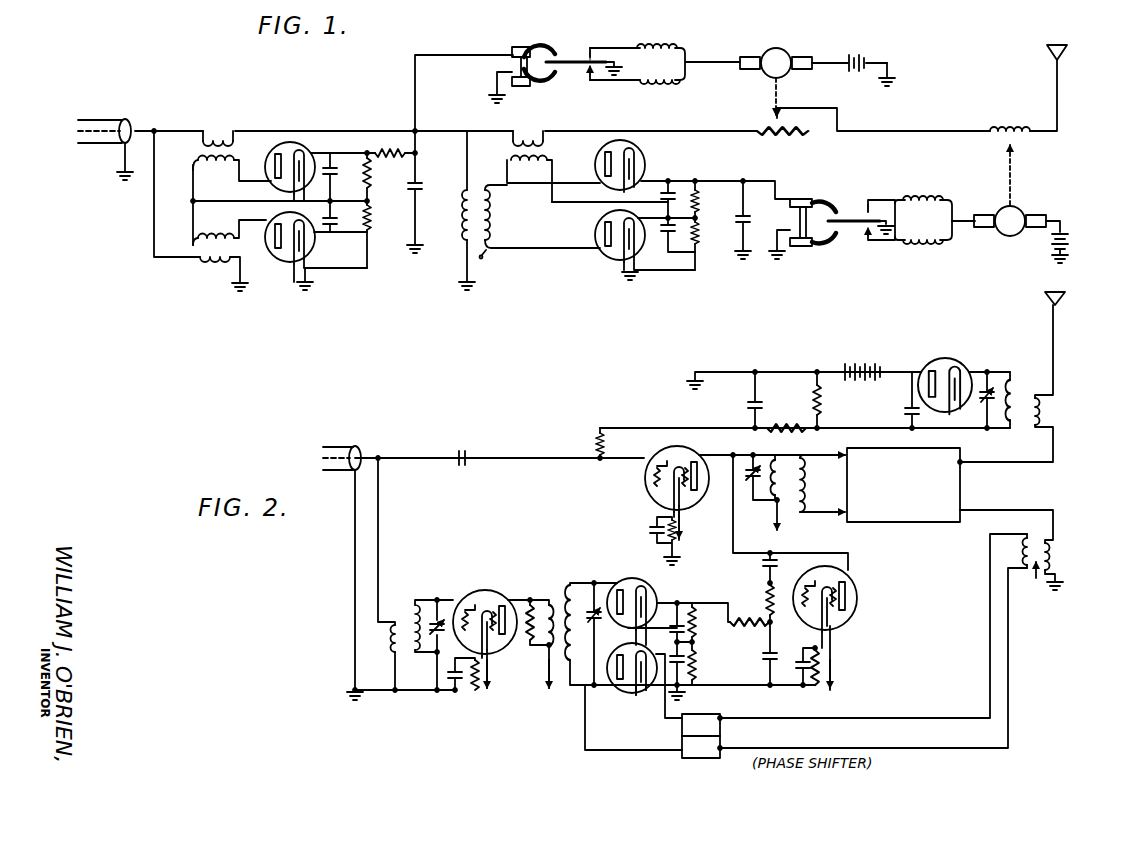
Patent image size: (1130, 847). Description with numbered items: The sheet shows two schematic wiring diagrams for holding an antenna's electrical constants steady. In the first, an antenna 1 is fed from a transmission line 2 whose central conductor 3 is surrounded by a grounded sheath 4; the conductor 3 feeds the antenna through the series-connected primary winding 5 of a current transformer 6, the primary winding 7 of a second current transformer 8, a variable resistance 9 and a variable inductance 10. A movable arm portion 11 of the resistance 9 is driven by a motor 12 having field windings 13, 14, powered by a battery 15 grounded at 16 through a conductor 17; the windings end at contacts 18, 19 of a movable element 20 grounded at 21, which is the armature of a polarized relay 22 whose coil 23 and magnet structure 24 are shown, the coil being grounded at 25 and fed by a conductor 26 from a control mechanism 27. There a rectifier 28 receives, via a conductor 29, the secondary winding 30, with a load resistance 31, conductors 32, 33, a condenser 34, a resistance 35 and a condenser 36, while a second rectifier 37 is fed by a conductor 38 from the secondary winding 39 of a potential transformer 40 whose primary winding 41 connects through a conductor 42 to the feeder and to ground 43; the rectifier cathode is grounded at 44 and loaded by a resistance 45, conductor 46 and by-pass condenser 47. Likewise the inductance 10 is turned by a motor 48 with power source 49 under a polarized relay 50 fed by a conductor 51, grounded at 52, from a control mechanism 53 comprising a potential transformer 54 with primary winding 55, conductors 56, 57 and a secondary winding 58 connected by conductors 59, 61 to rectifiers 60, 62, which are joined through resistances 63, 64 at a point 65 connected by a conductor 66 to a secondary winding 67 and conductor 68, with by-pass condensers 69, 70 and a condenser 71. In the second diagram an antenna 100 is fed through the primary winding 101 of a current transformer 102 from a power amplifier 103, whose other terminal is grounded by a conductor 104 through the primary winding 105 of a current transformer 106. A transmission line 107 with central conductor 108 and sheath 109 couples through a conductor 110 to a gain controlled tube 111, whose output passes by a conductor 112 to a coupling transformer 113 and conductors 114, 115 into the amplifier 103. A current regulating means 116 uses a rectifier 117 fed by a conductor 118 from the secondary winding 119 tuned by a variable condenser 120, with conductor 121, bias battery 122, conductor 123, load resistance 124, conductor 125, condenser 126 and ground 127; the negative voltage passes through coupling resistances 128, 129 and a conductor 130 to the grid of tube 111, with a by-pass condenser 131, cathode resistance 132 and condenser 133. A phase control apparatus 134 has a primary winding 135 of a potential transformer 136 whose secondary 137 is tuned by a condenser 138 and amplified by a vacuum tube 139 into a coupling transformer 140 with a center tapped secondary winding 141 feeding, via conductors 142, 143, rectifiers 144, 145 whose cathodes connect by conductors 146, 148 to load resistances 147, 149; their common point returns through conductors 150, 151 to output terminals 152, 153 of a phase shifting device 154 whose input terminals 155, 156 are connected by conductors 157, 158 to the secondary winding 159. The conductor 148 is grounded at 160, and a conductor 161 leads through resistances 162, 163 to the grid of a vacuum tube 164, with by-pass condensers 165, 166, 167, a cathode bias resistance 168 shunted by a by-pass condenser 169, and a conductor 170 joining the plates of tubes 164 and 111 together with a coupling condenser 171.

In FIG. 1, the radio frequency transmitting antenna 1 is at (1067, 52).
In FIG. 1, the radio transmission line 2 is at (106, 118).
In FIG. 1, the central conductor 3 is at (147, 128).
In FIG. 1, the grounded metallic sheath 4 is at (108, 145).
In FIG. 1, the primary winding 5 is at (218, 128).
In FIG. 1, the current transformer 6 is at (201, 150).
In FIG. 1, the primary winding 7 is at (531, 136).
In FIG. 1, the second current transformer 8 is at (508, 147).
In FIG. 1, the variable resistance 9 is at (778, 136).
In FIG. 1, the variable inductance 10 is at (1018, 126).
In FIG. 1, the movable arm portion 11 is at (774, 116).
In FIG. 1, the electric motor 12 is at (783, 55).
In FIG. 1, the field winding 13 is at (670, 42).
In FIG. 1, the field winding 14 is at (656, 86).
In FIG. 1, the battery 15 is at (865, 56).
In FIG. 1, the ground 16 is at (893, 75).
In FIG. 1, the conductor 17 is at (835, 62).
In FIG. 1, the contact 18 is at (593, 48).
In FIG. 1, the contact 19 is at (587, 70).
In FIG. 1, the movable element 20 is at (597, 80).
In FIG. 1, the ground 21 is at (620, 66).
In FIG. 1, the polarized relay 22 is at (526, 88).
In FIG. 1, the electrical coil 23 is at (512, 58).
In FIG. 1, the magnet 24 is at (556, 46).
In FIG. 1, the ground 25 is at (497, 88).
In FIG. 1, the conductor 26 is at (415, 88).
In FIG. 1, the control mechanism 27 is at (290, 300).
In FIG. 1, the rectifier 28 is at (284, 142).
In FIG. 1, the conductor 29 is at (232, 182).
In FIG. 1, the secondary winding 30 is at (242, 126).
In FIG. 1, the load resistance 31 is at (372, 176).
In FIG. 1, the conductor 32 is at (346, 152).
In FIG. 1, the conductor 33 is at (256, 200).
In FIG. 1, the condenser 34 is at (338, 171).
In FIG. 1, the resistance 35 is at (392, 150).
In FIG. 1, the condenser 36 is at (418, 180).
In FIG. 1, the second rectifier 37 is at (283, 262).
In FIG. 1, the conductor 38 is at (238, 230).
In FIG. 1, the secondary winding 39 is at (210, 230).
In FIG. 1, the potential transformer 40 is at (198, 248).
In FIG. 1, the primary winding 41 is at (202, 263).
In FIG. 1, the conductor 42 is at (154, 222).
In FIG. 1, the ground 43 is at (236, 284).
In FIG. 1, the ground 44 is at (314, 280).
In FIG. 1, the load resistance 45 is at (371, 214).
In FIG. 1, the conductor 46 is at (369, 260).
In FIG. 1, the by-pass condenser 47 is at (330, 233).
In FIG. 1, the reversible electric motor 48 is at (1022, 212).
In FIG. 1, the source of power 49 is at (1068, 245).
In FIG. 1, the polarized relay 50 is at (832, 190).
In FIG. 1, the conductor 51 is at (771, 178).
In FIG. 1, the ground 52 is at (777, 246).
In FIG. 1, the control mechanism 53 is at (620, 276).
In FIG. 1, the potential transformer 54 is at (485, 258).
In FIG. 1, the primary winding 55 is at (463, 216).
In FIG. 1, the conductor 56 is at (465, 190).
In FIG. 1, the conductor 57 is at (467, 262).
In FIG. 1, the secondary winding 58 is at (492, 226).
In FIG. 1, the conductor 59 is at (518, 184).
In FIG. 1, the rectifier 60 is at (646, 159).
In FIG. 1, the conductor 61 is at (528, 252).
In FIG. 1, the rectifier 62 is at (608, 258).
In FIG. 1, the resistance 63 is at (700, 185).
In FIG. 1, the resistance 64 is at (702, 236).
In FIG. 1, the point of interconnection 65 is at (702, 200).
In FIG. 1, the conductor 66 is at (555, 203).
In FIG. 1, the secondary winding 67 is at (548, 157).
In FIG. 1, the conductor 68 is at (507, 170).
In FIG. 1, the by-pass condenser 69 is at (672, 190).
In FIG. 1, the by-pass condenser 70 is at (670, 238).
In FIG. 1, the condenser 71 is at (736, 218).
In FIG. 2, the antenna 100 is at (1060, 313).
In FIG. 2, the primary winding 101 is at (1050, 410).
In FIG. 2, the current transformer 102 is at (1023, 400).
In FIG. 2, the radio frequency power amplifier 103 is at (962, 488).
In FIG. 2, the conductor 104 is at (1062, 530).
In FIG. 2, the primary winding 105 is at (1052, 552).
In FIG. 2, the current transformer 106 is at (1034, 582).
In FIG. 2, the transmission line 107 is at (336, 445).
In FIG. 2, the central conductor 108 is at (378, 454).
In FIG. 2, the grounded metallic sheath 109 is at (330, 470).
In FIG. 2, the conductor 110 is at (571, 456).
In FIG. 2, the gain controlled amplifying tube 111 is at (645, 486).
In FIG. 2, the conductor 112 is at (724, 445).
In FIG. 2, the coupling transformer 113 is at (783, 457).
In FIG. 2, the conductor 114 is at (807, 470).
In FIG. 2, the conductor 115 is at (807, 508).
In FIG. 2, the current regulating means 116 is at (920, 366).
In FIG. 2, the rectifier 117 is at (960, 362).
In FIG. 2, the conductor 118 is at (986, 372).
In FIG. 2, the secondary winding 119 is at (1012, 372).
In FIG. 2, the variable condenser 120 is at (980, 399).
In FIG. 2, the conductor 121 is at (897, 372).
In FIG. 2, the bias battery 122 is at (862, 364).
In FIG. 2, the conductor 123 is at (822, 372).
In FIG. 2, the load resistance 124 is at (813, 398).
In FIG. 2, the conductor 125 is at (890, 420).
In FIG. 2, the condenser 126 is at (920, 427).
In FIG. 2, the ground 127 is at (726, 372).
In FIG. 2, the coupling resistance 128 is at (792, 425).
In FIG. 2, the coupling resistance 129 is at (598, 431).
In FIG. 2, the conductor 130 is at (651, 427).
In FIG. 2, the by-pass condenser 131 is at (749, 406).
In FIG. 2, the cathode resistance 132 is at (679, 552).
In FIG. 2, the condenser 133 is at (652, 529).
In FIG. 2, the control apparatus 134 is at (566, 580).
In FIG. 2, the primary winding 135 is at (391, 648).
In FIG. 2, the potential transformer 136 is at (406, 620).
In FIG. 2, the secondary 137 is at (421, 600).
In FIG. 2, the condenser 138 is at (432, 640).
In FIG. 2, the vacuum tube 139 is at (485, 590).
In FIG. 2, the coupling transformer 140 is at (558, 598).
In FIG. 2, the center tapped secondary winding 141 is at (575, 583).
In FIG. 2, the conductor 142 is at (598, 610).
In FIG. 2, the conductor 143 is at (592, 690).
In FIG. 2, the rectifier 144 is at (641, 578).
In FIG. 2, the rectifier 145 is at (634, 695).
In FIG. 2, the conductor 146 is at (676, 622).
In FIG. 2, the load resistance 147 is at (698, 628).
In FIG. 2, the conductor 148 is at (686, 694).
In FIG. 2, the load resistance 149 is at (698, 666).
In FIG. 2, the conductor 150 is at (682, 752).
In FIG. 2, the conductor 151 is at (603, 752).
In FIG. 2, the output terminal 152 is at (701, 736).
In FIG. 2, the output terminal 153 is at (701, 745).
In FIG. 2, the phase shifting device 154 is at (694, 758).
In FIG. 2, the input terminal 155 is at (738, 718).
In FIG. 2, the input terminal 156 is at (730, 748).
In FIG. 2, the conductor 157 is at (870, 718).
In FIG. 2, the conductor 158 is at (906, 749).
In FIG. 2, the secondary winding 159 is at (1023, 540).
In FIG. 2, the ground 160 is at (665, 722).
In FIG. 2, the conductor 161 is at (718, 603).
In FIG. 2, the resistance 162 is at (752, 618).
In FIG. 2, the resistance 163 is at (766, 594).
In FIG. 2, the vacuum tube 164 is at (852, 588).
In FIG. 2, the by-pass condenser 165 is at (658, 630).
In FIG. 2, the by-pass condenser 166 is at (686, 658).
In FIG. 2, the by-pass condenser 167 is at (773, 652).
In FIG. 2, the cathode bias resistance 168 is at (822, 662).
In FIG. 2, the by-pass condenser 169 is at (803, 678).
In FIG. 2, the conductor 170 is at (822, 551).
In FIG. 2, the coupling condenser 171 is at (767, 556).